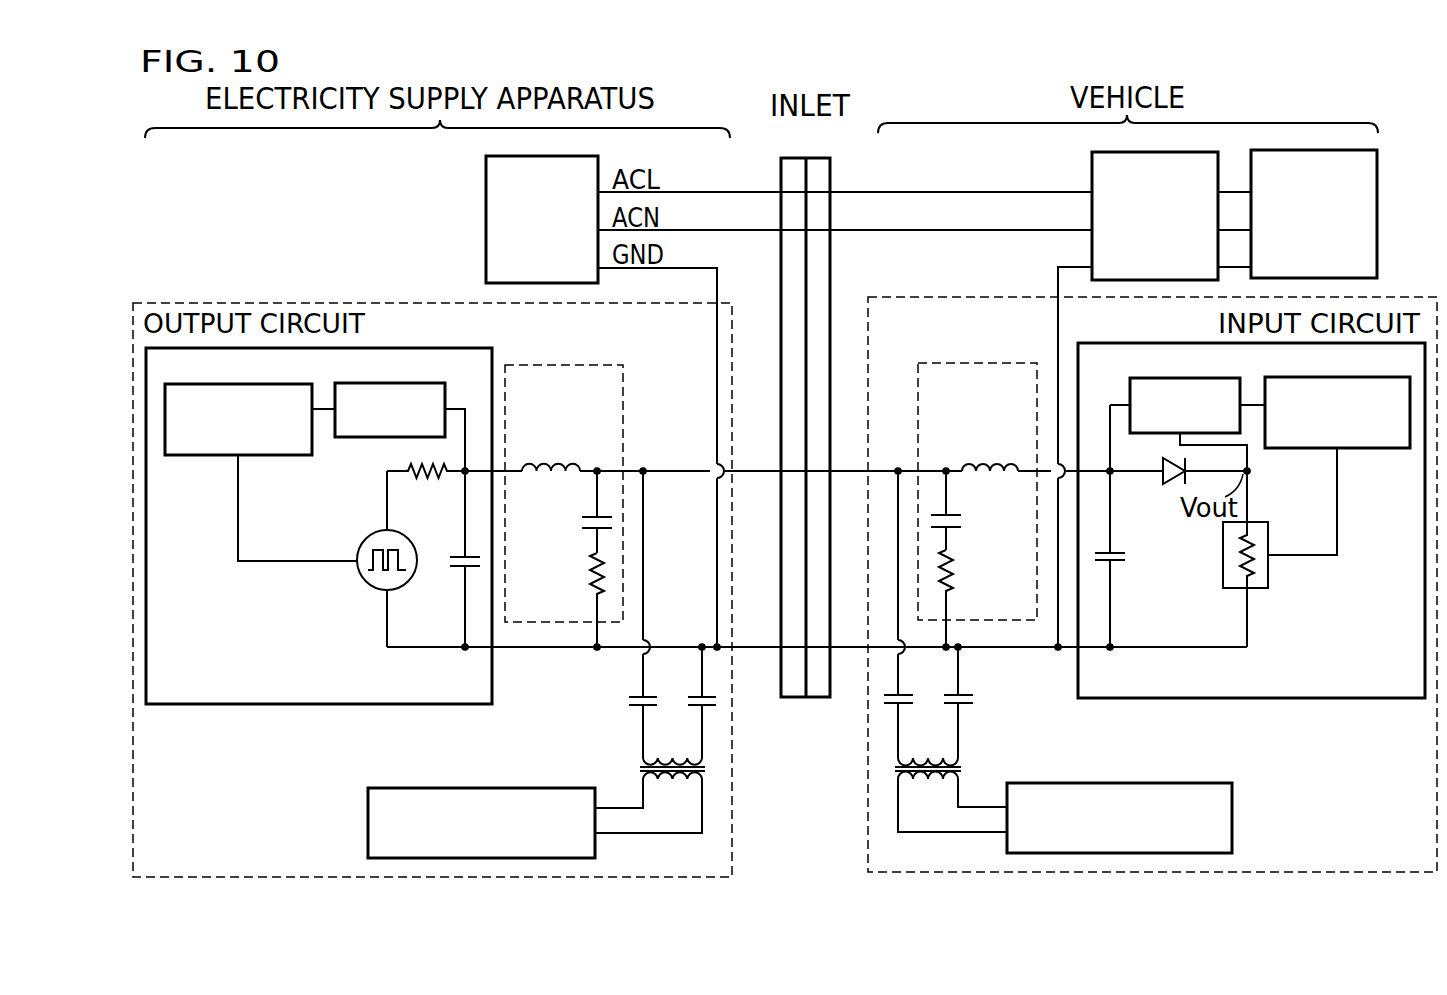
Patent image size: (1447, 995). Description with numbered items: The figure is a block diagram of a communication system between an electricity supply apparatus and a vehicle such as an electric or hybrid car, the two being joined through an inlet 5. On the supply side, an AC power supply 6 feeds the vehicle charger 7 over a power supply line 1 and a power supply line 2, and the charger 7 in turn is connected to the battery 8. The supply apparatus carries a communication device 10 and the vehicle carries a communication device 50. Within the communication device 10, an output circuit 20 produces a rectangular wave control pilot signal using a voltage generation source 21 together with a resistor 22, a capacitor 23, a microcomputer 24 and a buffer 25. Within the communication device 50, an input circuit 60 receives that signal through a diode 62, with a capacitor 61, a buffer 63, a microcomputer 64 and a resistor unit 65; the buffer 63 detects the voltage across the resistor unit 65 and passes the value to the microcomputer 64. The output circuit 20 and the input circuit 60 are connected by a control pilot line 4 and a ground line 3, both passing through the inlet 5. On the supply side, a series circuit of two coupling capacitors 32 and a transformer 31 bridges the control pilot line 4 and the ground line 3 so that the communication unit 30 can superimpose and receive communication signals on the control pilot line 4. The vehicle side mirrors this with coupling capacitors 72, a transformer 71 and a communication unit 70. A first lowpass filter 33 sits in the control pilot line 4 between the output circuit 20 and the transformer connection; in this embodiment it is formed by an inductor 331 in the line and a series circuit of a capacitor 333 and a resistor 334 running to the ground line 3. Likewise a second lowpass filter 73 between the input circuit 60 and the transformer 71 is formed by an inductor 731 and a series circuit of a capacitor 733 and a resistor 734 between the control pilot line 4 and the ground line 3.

The power supply line (ACL) 1 is at (912, 192).
The power supply line (ACN) 2 is at (912, 230).
The ground line 3 is at (757, 651).
The control pilot line 4 is at (757, 475).
The inlet 5 is at (797, 160).
The AC power supply 6 is at (486, 186).
The charger 7 is at (1092, 175).
The battery 8 is at (1377, 188).
The communication device 10 is at (380, 303).
The output circuit 20 is at (430, 705).
The voltage generation source 21 is at (402, 532).
The resistor 22 is at (416, 468).
The capacitor 23 is at (452, 565).
The microcomputer 24 is at (240, 383).
The buffer 25 is at (372, 383).
The communication unit 30 is at (368, 820).
The transformer 31 is at (640, 770).
The coupling capacitors 32 is at (628, 700).
The first lowpass filter 33 is at (557, 365).
The inductor 331 is at (558, 450).
The capacitor 333 is at (582, 520).
The resistor 334 is at (590, 572).
The communication device 50 is at (1400, 297).
The input circuit 60 is at (1330, 700).
The capacitor 61 is at (1126, 563).
The diode 62 is at (1170, 479).
The buffer 63 is at (1157, 378).
The microcomputer 64 is at (1375, 450).
The resistor unit 65 is at (1270, 578).
The communication unit 70 is at (1232, 818).
The transformer 71 is at (962, 768).
The coupling capacitors 72 is at (884, 700).
The second lowpass filter 73 is at (965, 363).
The inductor 731 is at (993, 450).
The capacitor 733 is at (983, 508).
The resistor 734 is at (955, 572).